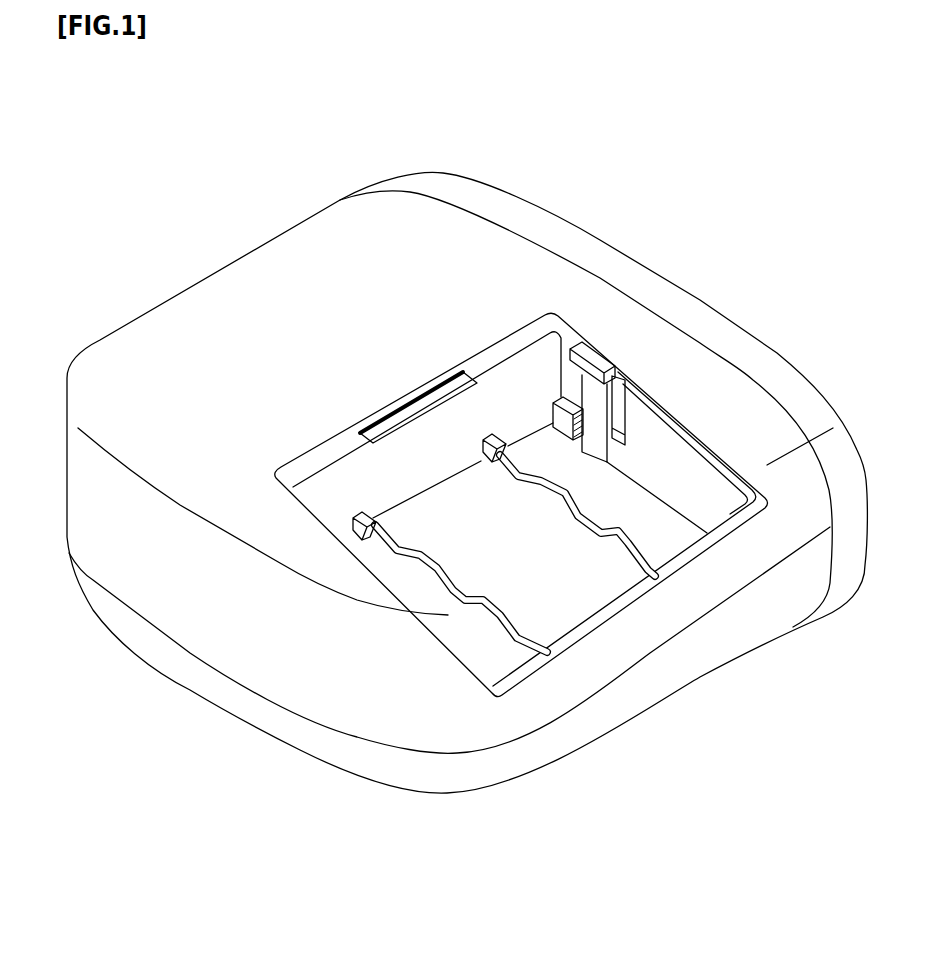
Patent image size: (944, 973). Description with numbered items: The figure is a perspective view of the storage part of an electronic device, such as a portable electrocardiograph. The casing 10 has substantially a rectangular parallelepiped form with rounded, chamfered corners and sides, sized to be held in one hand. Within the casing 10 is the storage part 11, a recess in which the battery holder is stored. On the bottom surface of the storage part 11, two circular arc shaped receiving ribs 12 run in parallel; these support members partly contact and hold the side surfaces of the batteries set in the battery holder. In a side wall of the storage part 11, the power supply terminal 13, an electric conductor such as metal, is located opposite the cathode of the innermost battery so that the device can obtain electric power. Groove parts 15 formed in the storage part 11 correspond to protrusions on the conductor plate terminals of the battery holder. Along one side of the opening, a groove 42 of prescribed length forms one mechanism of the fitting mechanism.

The casing 10 is at (242, 310).
The storage part 11 is at (633, 503).
The receiving ribs 12 is at (512, 463).
The power supply terminal 13 is at (617, 392).
The groove parts 15 is at (569, 388).
The groove 42 is at (443, 397).